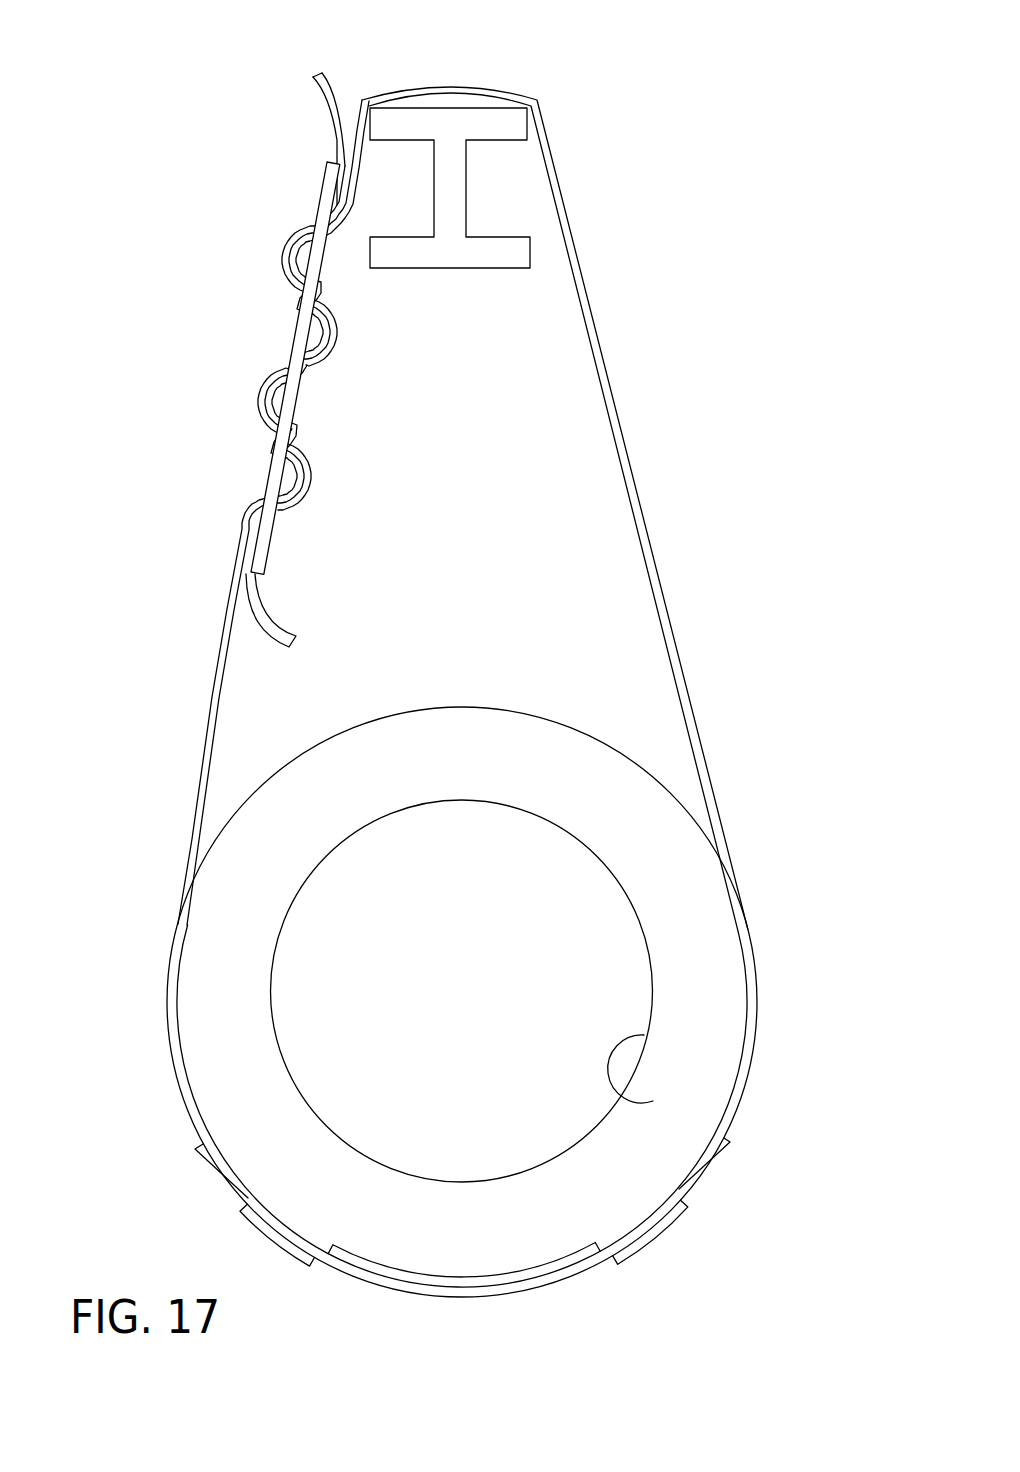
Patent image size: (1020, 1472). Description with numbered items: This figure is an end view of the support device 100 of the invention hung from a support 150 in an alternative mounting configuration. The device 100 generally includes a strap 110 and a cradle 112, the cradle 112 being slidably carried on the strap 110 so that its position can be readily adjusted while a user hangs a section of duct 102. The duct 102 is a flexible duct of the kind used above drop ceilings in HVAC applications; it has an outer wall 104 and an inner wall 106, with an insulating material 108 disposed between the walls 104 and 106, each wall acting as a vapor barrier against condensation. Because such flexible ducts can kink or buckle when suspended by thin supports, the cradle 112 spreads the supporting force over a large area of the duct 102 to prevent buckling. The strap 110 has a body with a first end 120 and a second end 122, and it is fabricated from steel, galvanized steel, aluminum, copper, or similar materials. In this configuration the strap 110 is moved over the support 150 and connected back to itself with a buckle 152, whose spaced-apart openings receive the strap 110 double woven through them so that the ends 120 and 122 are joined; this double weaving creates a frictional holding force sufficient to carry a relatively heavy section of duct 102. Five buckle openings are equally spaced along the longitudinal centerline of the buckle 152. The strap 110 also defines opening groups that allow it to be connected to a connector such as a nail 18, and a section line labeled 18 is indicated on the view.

The device 100 is at (670, 1247).
The duct 102 is at (642, 826).
The outer wall 104 is at (618, 745).
The inner wall 106 is at (653, 1101).
The insulating material 108 is at (680, 963).
The strap 110 is at (618, 407).
The cradle 112 is at (708, 1173).
The first end 120 is at (322, 74).
The second end 122 is at (288, 634).
The support 150 is at (453, 207).
The buckle 152 is at (291, 408).
The nail 18 is at (180, 643).